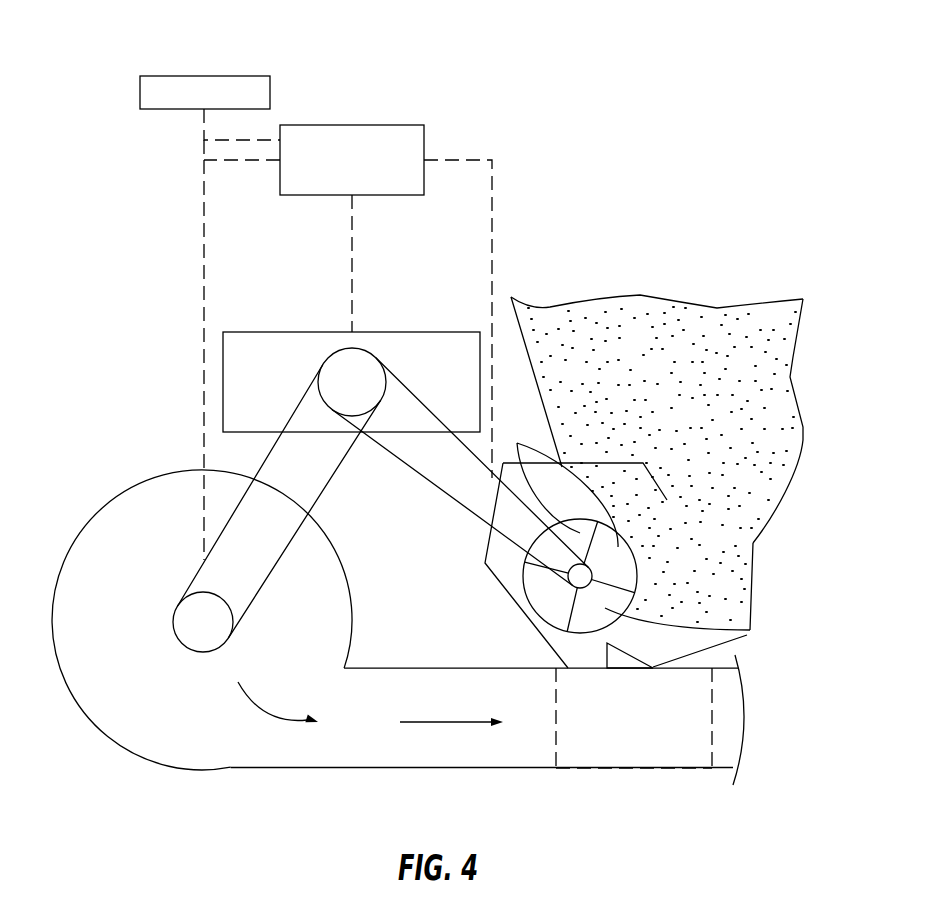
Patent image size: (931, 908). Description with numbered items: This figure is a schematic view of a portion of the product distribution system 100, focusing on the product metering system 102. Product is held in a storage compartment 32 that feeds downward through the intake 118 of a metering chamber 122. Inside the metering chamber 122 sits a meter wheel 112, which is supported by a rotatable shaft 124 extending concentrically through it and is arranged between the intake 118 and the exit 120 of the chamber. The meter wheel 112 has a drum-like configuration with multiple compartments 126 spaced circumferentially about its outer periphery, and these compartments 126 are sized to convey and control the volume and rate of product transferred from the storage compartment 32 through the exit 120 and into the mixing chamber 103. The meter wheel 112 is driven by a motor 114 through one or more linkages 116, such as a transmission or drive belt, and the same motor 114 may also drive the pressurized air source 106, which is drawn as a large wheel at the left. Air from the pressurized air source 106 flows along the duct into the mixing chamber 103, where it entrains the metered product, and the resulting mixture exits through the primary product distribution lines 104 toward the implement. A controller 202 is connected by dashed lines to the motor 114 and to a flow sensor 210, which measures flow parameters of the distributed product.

The product distribution system 100 is at (76, 263).
The product metering system 102 is at (401, 475).
The flow sensor 210 is at (212, 76).
The controller 202 is at (359, 125).
The motor 114 is at (286, 332).
The linkages 116 is at (335, 472).
The pressurized air source 106 is at (130, 732).
The rotatable shaft 124 is at (568, 573).
The meter wheel 112 is at (750, 631).
The exit 120 is at (575, 658).
The compartments 126 is at (556, 480).
The metering chamber 122 is at (764, 587).
The intake 118 is at (726, 481).
The storage compartment 32 is at (551, 267).
The mixing chamber 103 is at (580, 770).
The primary product distribution lines 104 is at (722, 757).